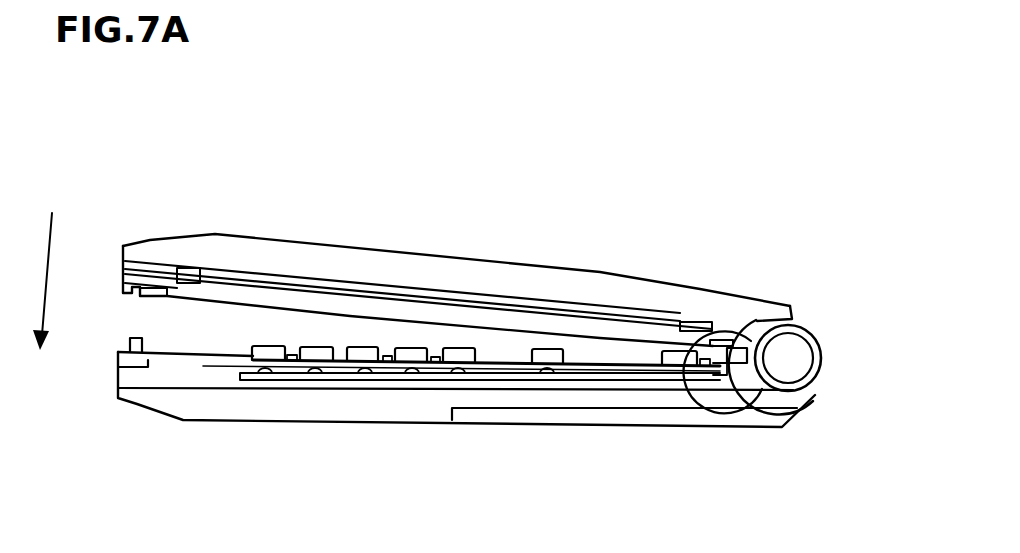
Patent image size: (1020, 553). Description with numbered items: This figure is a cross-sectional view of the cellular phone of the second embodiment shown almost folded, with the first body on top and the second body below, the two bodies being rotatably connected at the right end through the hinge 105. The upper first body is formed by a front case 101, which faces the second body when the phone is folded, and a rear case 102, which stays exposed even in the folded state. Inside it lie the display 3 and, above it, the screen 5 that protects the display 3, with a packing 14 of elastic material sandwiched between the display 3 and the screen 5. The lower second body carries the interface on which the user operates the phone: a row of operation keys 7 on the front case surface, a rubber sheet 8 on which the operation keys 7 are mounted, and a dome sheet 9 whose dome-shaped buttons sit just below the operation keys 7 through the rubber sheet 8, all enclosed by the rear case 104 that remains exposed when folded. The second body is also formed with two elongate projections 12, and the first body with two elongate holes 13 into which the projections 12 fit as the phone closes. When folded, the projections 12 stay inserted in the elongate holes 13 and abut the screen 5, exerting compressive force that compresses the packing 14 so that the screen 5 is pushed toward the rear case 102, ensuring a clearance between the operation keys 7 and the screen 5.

The display 3 is at (410, 292).
The screen 5 is at (322, 305).
The operation keys 7 is at (313, 350).
The rubber sheet 8 is at (390, 373).
The dome sheet 9 is at (545, 378).
The elongate projections 12 is at (133, 352).
The elongate holes 13 is at (135, 291).
The packing 14 is at (183, 262).
The front case 101 is at (155, 278).
The rear case 102 is at (522, 280).
The rear case 104 is at (327, 407).
The hinge 105 is at (793, 360).